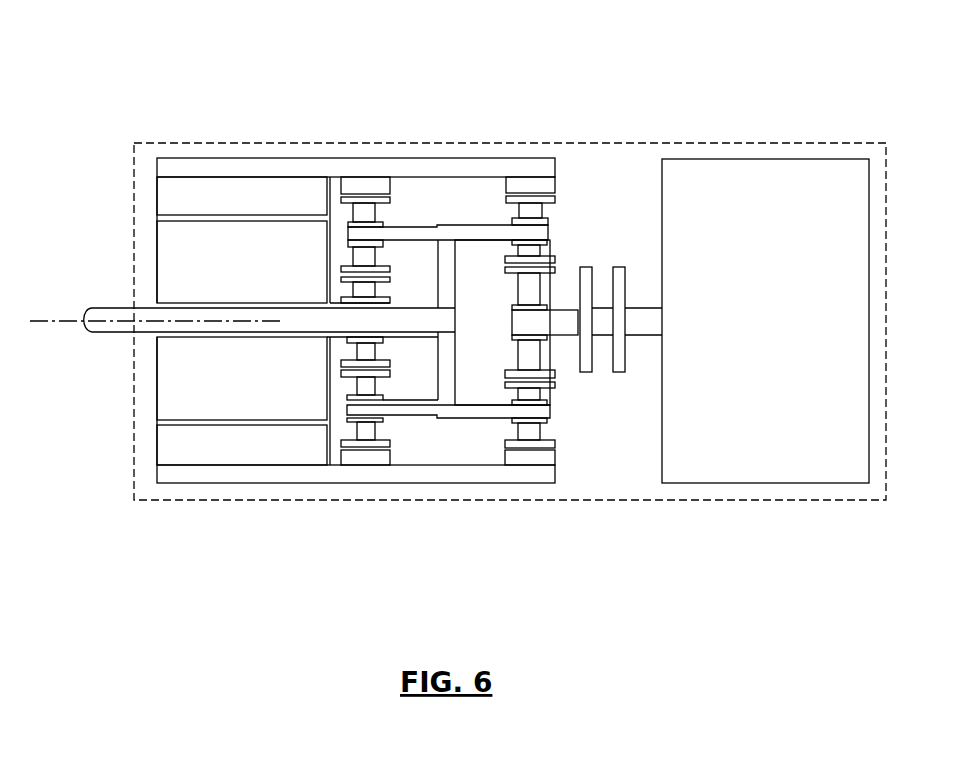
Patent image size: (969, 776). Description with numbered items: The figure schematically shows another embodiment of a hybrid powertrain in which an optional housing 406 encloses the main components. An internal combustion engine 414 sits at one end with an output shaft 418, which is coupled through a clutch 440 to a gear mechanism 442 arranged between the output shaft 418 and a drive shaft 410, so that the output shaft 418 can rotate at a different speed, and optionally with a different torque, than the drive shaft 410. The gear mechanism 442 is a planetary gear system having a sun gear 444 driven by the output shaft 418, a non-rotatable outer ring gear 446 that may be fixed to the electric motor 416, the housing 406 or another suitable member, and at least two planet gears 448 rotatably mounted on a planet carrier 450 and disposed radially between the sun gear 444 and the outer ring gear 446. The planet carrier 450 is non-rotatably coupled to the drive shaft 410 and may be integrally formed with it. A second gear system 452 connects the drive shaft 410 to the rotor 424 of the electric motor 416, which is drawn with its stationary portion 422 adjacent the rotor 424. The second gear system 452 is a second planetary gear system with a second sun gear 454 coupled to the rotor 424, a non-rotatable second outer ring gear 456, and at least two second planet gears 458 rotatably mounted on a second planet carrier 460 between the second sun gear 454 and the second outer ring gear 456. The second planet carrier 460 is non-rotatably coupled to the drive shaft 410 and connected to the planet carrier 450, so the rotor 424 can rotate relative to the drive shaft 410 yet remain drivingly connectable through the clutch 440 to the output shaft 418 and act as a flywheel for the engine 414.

The housing 406 is at (735, 143).
The drive shaft 410 is at (112, 326).
The internal combustion engine 414 is at (823, 173).
The electric motor 416 is at (212, 484).
The output shaft 418 is at (636, 330).
The stator 422 is at (165, 198).
The rotor 424 is at (165, 383).
The clutch 440 is at (604, 259).
The gear mechanism 442 is at (491, 199).
The sun gear 444 is at (542, 285).
The outer ring gear 446 is at (550, 458).
The planet gears 448 is at (545, 212).
The planet carrier 450 is at (473, 412).
The second gear system 452 is at (339, 135).
The second sun gear 454 is at (372, 294).
The second outer ring gear 456 is at (375, 182).
The second planet gears 458 is at (373, 214).
The second planet carrier 460 is at (408, 410).